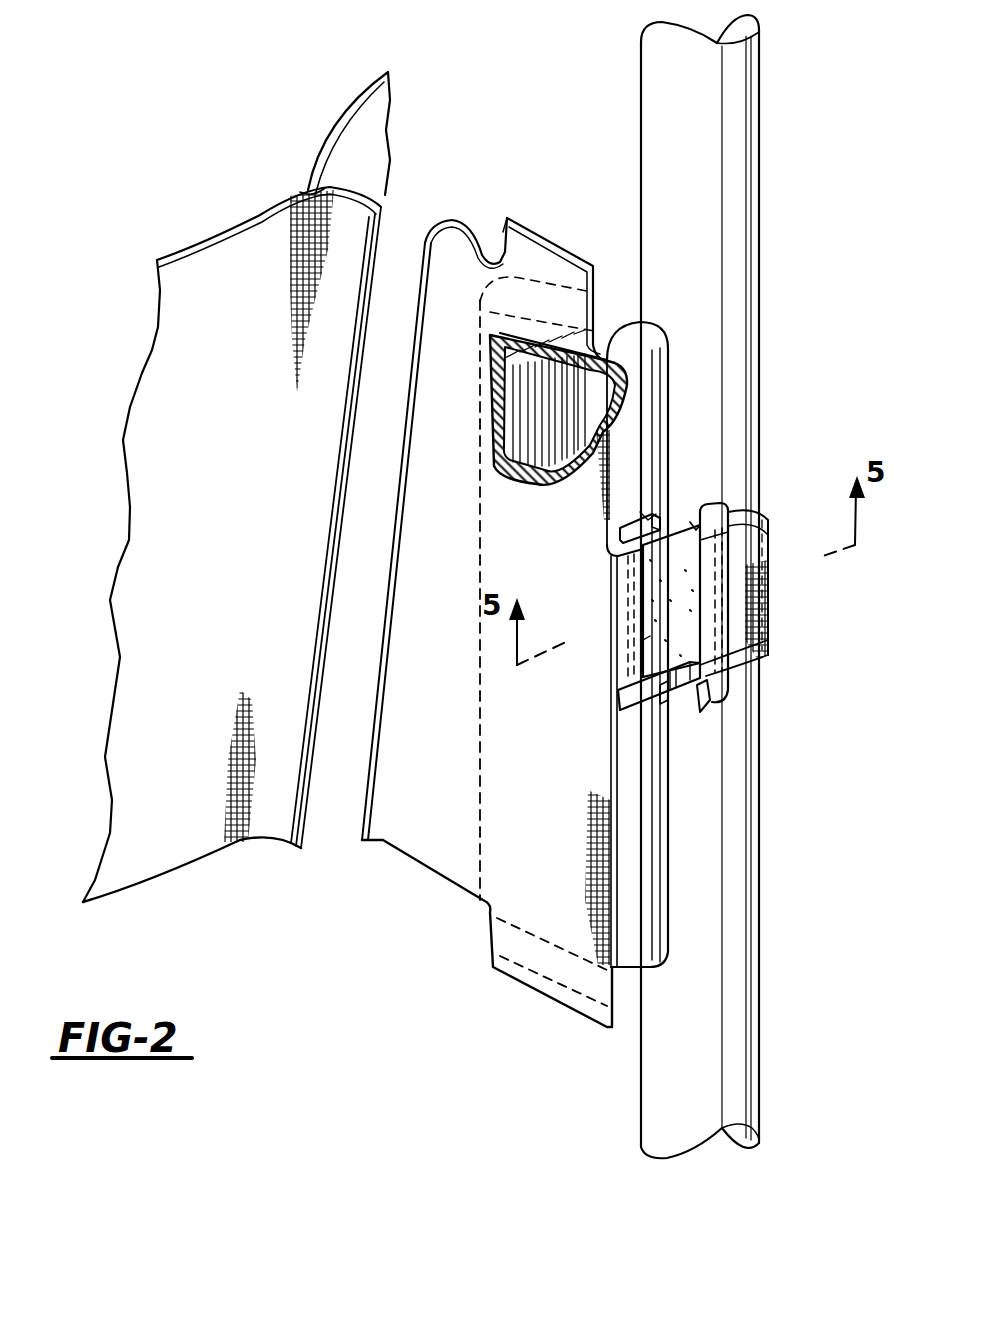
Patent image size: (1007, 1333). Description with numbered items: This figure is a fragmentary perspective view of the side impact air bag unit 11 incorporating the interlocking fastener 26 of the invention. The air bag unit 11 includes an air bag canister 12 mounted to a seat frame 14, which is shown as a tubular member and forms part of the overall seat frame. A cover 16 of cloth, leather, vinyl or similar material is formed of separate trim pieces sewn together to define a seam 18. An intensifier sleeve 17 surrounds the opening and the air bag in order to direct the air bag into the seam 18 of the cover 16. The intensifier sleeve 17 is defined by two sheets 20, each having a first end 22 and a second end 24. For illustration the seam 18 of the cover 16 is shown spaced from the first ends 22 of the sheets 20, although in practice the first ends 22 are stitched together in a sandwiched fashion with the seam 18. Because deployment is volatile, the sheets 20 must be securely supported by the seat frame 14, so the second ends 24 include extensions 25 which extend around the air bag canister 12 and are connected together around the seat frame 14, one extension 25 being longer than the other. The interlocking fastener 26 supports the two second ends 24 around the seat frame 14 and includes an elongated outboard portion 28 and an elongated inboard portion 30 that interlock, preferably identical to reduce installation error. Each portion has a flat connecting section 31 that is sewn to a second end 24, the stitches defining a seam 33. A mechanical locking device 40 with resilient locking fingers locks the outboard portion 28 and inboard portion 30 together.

The side impact air bag unit 11 is at (218, 197).
The air bag canister 12 is at (646, 354).
The seat frame 14 is at (737, 905).
The cover 16 is at (386, 100).
The intensifier sleeve 17 is at (554, 242).
The seam 18 is at (372, 176).
The sheet 20 is at (494, 622).
The first end 22 is at (410, 454).
The second end 24 is at (653, 410).
The extension 25 is at (766, 613).
The interlocking fastener 26 is at (679, 718).
The outboard portion 28 is at (656, 542).
The inboard portion 30 is at (683, 682).
The flat connecting section 31 is at (713, 507).
The seam 33 is at (720, 553).
The mechanical locking device 40 is at (707, 718).